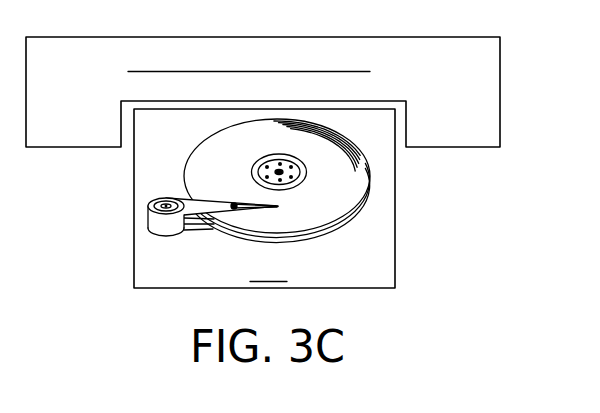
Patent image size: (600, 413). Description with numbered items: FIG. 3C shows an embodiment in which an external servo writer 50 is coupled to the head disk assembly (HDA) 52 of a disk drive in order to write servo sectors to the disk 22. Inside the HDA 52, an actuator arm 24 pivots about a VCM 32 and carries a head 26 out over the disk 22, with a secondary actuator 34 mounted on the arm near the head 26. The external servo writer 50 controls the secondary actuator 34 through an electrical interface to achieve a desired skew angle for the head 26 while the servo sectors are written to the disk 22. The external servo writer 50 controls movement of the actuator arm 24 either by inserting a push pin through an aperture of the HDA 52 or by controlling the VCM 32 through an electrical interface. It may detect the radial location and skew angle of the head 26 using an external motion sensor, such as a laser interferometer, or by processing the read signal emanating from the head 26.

The disk 22 is at (362, 199).
The actuator arm 24 is at (212, 199).
The head 26 is at (271, 213).
The VCM 32 is at (164, 189).
The secondary actuator 34 is at (237, 203).
The external servo writer 50 is at (500, 87).
The head disk assembly (HDA) 52 is at (395, 211).